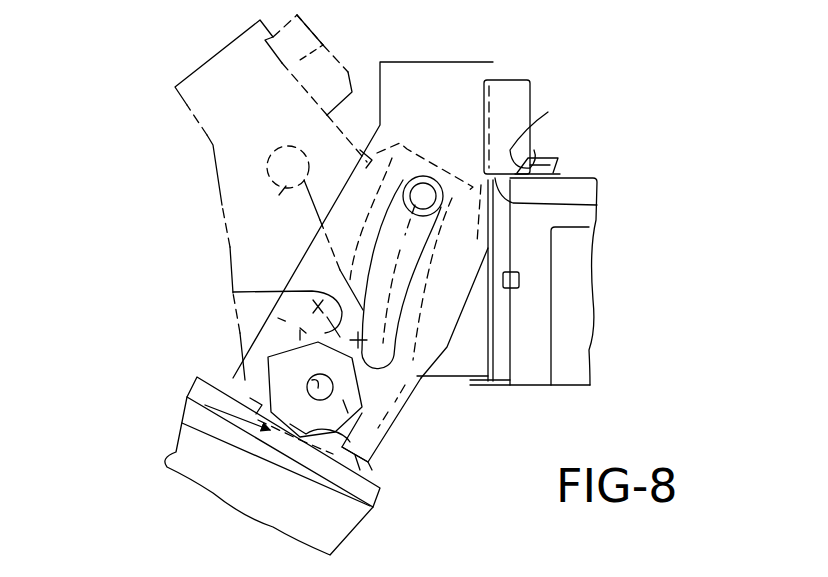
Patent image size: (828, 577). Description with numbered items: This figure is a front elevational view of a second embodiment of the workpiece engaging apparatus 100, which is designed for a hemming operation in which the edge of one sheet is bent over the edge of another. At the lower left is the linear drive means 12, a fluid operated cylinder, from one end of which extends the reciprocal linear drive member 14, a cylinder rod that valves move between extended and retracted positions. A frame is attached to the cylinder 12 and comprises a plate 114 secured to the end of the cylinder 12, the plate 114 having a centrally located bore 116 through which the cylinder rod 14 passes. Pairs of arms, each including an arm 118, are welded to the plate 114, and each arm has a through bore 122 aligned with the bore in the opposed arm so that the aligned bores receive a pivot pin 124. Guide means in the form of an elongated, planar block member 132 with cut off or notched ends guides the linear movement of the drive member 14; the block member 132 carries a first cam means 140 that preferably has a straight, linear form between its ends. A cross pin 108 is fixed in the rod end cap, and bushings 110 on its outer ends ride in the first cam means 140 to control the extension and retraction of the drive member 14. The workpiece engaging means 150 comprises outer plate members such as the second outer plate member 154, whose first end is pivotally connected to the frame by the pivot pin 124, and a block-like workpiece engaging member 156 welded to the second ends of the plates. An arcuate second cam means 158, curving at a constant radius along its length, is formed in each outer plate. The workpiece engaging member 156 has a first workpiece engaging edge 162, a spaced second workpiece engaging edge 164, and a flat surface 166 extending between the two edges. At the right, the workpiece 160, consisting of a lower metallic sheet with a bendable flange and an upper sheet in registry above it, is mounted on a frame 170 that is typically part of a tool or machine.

The linear drive means 12 is at (184, 450).
The linear drive member 14 is at (192, 404).
The workpiece engaging apparatus 100 is at (112, 246).
The cross pin 108 is at (425, 192).
The bushings 110 is at (428, 172).
The plate 114 is at (383, 487).
The bore 116 is at (400, 446).
The arm 118 is at (367, 413).
The through bore 122 is at (305, 382).
The pivot pin 124 is at (306, 392).
The block member 132 is at (350, 162).
The first cam means 140 is at (233, 292).
The workpiece engaging means 150 is at (506, 96).
The second outer plate member 154 is at (203, 77).
The workpiece engaging member 156 is at (314, 66).
The second cam means 158 is at (288, 206).
The workpiece 160 is at (545, 162).
The first workpiece engaging edge 162 is at (536, 154).
The second workpiece engaging edge 164 is at (598, 205).
The flat surface 166 is at (550, 125).
The frame 170 is at (578, 354).